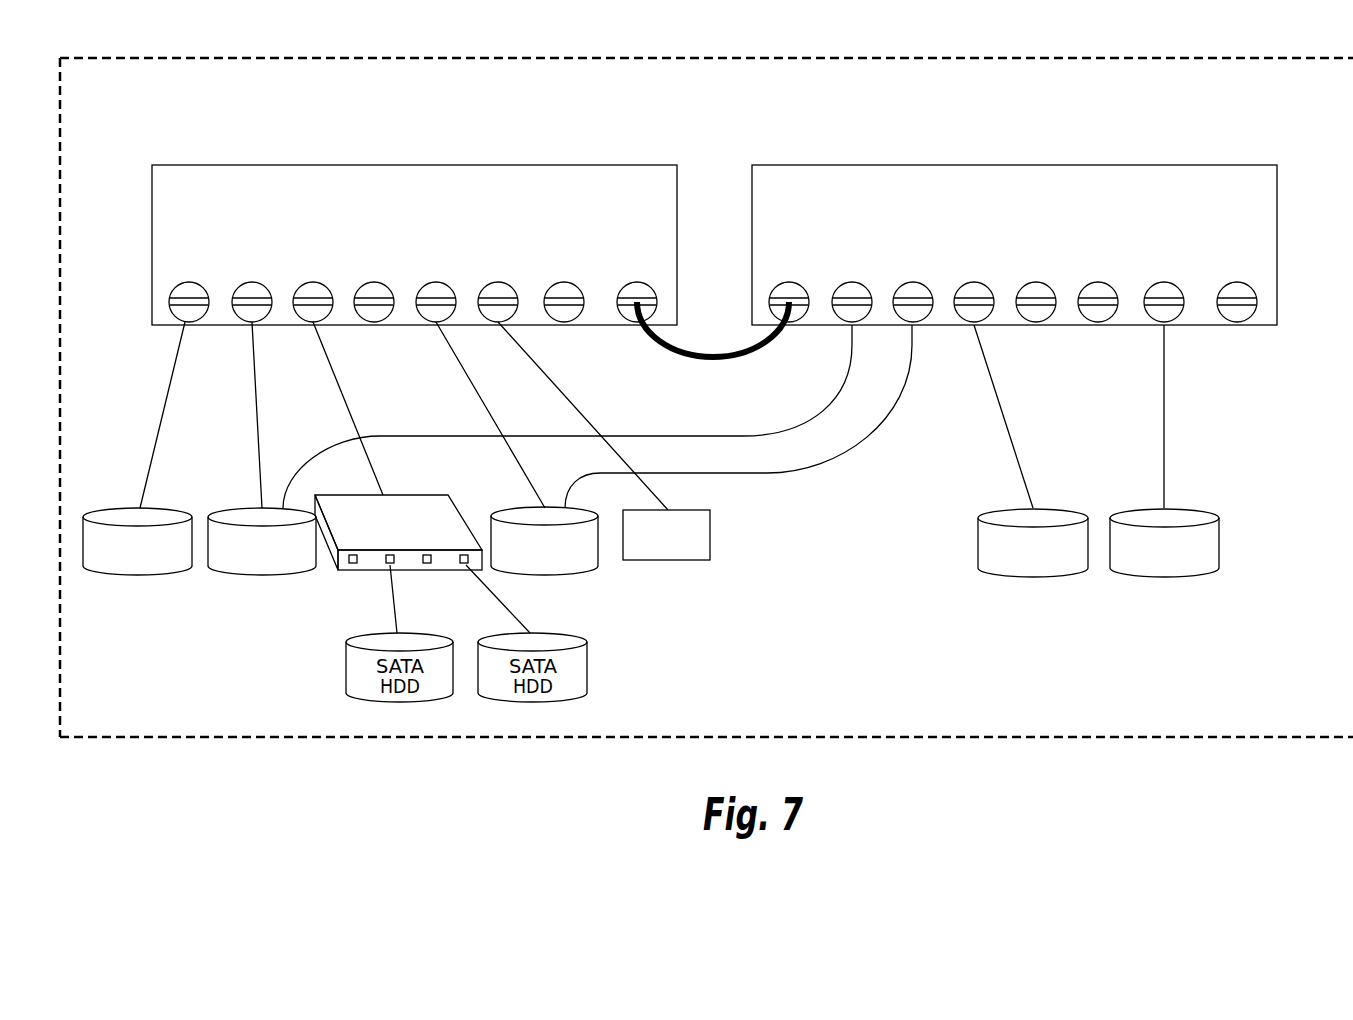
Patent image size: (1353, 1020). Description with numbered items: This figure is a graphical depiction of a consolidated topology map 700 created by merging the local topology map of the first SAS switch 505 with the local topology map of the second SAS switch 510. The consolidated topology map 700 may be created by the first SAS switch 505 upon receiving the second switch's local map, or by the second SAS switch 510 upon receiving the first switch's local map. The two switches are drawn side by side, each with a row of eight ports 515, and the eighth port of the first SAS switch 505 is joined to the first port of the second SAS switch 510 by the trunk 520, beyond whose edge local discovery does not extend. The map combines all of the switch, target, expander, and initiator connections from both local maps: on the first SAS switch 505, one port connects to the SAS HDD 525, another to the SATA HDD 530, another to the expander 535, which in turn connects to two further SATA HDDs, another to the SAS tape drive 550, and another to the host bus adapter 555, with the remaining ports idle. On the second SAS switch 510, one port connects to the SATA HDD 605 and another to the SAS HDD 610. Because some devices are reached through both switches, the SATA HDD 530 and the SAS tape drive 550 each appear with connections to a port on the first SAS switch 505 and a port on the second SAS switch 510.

The consolidated topology map 700 is at (792, 58).
The first SAS switch 505 is at (459, 228).
The second SAS switch 510 is at (1059, 228).
The ports 515 is at (170, 307).
The trunk 520 is at (750, 350).
The SAS HDD 525 is at (140, 577).
The SATA HDD 530 is at (262, 577).
The expander 535 is at (370, 573).
The SAS tape drive 550 is at (557, 576).
The host bus adapter (HBA) 555 is at (672, 560).
The SATA HDD 605 is at (978, 549).
The SAS HDD 610 is at (1219, 545).